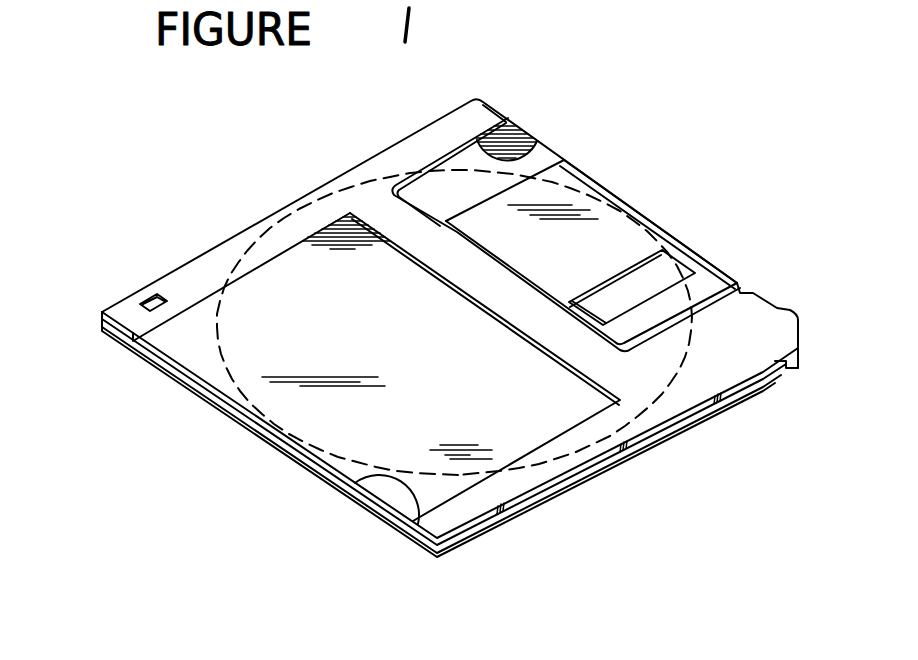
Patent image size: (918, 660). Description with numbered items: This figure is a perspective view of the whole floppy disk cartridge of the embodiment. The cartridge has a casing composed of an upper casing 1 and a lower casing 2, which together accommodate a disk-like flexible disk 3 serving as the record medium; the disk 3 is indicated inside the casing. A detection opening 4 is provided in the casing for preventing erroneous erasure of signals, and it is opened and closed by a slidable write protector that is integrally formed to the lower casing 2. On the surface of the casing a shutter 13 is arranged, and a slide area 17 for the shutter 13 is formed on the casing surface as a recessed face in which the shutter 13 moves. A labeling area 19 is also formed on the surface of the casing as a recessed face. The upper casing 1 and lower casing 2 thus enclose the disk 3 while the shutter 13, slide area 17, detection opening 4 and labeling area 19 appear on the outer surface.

The upper casing 1 is at (593, 468).
The lower casing 2 is at (238, 305).
The flexible disk 3 is at (594, 196).
The detection opening 4 is at (152, 297).
The shutter 13 is at (717, 278).
The slide area 17 is at (517, 177).
The labeling area 19 is at (352, 486).